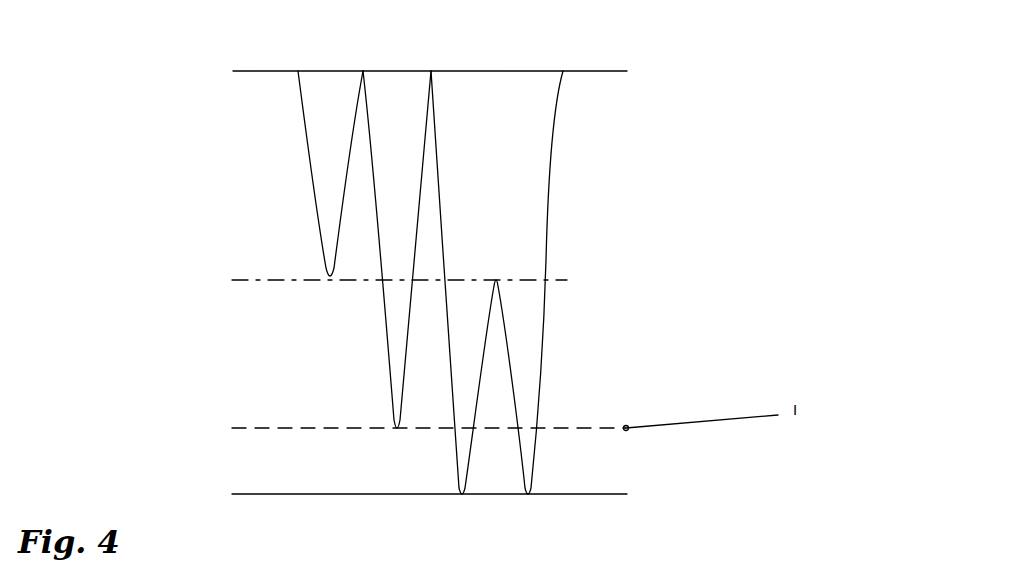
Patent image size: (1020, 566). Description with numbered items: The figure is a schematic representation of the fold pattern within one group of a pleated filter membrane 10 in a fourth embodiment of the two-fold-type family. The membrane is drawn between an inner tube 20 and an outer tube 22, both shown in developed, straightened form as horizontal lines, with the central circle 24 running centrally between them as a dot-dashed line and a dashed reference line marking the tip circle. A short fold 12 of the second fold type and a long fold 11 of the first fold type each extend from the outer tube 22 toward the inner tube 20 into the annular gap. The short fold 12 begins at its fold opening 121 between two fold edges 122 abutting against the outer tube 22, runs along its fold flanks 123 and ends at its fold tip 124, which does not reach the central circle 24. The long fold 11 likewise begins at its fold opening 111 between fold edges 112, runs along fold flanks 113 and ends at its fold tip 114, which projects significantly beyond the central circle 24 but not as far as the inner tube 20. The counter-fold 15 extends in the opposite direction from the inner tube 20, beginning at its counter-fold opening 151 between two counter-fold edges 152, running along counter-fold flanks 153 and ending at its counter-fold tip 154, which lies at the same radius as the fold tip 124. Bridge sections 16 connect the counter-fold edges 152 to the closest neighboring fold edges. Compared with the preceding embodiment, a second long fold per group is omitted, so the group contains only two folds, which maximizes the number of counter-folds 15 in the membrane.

The outer tube 22 is at (250, 71).
The inner tube 20 is at (248, 494).
The central circle 24 is at (600, 280).
The filter membrane 10 is at (322, 255).
The long fold of a first fold type 11 is at (397, 192).
The short fold of a second fold type 12 is at (332, 232).
The fold tip of the long fold 114 is at (397, 428).
The counter-fold edge 152 is at (462, 494).
The fold edge of the short fold 122 is at (298, 71).
The fold opening of the short fold 121 is at (327, 85).
The fold edge of the long fold 112 is at (431, 70).
The fold opening of the long fold 111 is at (400, 85).
The counter-fold tip 154 is at (496, 280).
The fold flank of the short fold 123 is at (346, 172).
The fold flank of the long fold 113 is at (419, 172).
The counter-fold 15 is at (494, 312).
The bridge section 16 is at (449, 343).
The counter-fold flank 153 is at (513, 373).
The fold tip of the short fold 124 is at (330, 280).
The counter-fold opening 151 is at (496, 460).